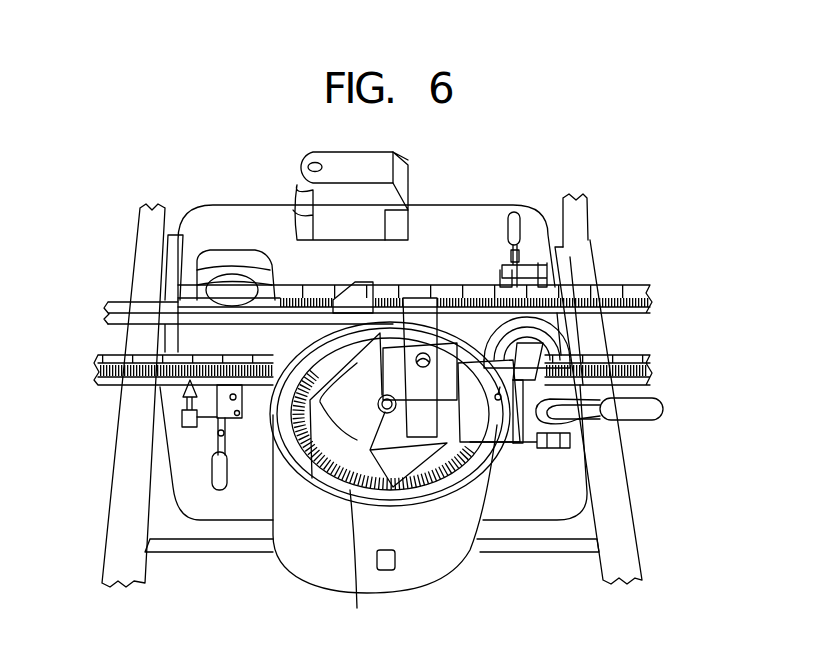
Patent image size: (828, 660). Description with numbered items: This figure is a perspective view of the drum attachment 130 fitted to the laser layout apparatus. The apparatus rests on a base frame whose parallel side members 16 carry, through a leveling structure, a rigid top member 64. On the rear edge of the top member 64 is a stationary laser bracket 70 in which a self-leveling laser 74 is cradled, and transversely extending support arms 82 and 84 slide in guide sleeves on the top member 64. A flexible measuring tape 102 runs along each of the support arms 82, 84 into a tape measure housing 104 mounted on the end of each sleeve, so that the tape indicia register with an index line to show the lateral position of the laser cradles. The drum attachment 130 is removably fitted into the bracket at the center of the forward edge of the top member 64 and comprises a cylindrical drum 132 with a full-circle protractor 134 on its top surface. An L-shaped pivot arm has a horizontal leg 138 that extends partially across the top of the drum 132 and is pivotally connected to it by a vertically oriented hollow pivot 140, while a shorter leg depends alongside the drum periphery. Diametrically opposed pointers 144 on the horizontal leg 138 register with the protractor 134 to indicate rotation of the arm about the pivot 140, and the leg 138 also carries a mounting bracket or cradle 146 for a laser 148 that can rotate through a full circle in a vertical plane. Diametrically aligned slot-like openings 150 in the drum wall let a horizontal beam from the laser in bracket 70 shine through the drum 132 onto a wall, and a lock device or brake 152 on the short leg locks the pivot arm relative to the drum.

The side members 16 is at (620, 512).
The top member 64 is at (482, 215).
The laser bracket 70 is at (403, 227).
The self-leveling laser 74 is at (325, 160).
The support arm 82 is at (120, 307).
The support arm 84 is at (652, 367).
The flexible measuring tape 102 is at (617, 288).
The tape measure housing 104 is at (225, 262).
The drum attachment 130 is at (296, 569).
The drum 132 is at (433, 557).
The protractor 134 is at (310, 470).
The horizontal leg 138 is at (500, 423).
The hollow pivot 140 is at (343, 477).
The pointers 144 is at (353, 563).
The mounting bracket or cradle 146 is at (457, 480).
The laser 148 is at (423, 317).
The slot-like openings 150 is at (395, 560).
The lock device or brake 152 is at (637, 413).